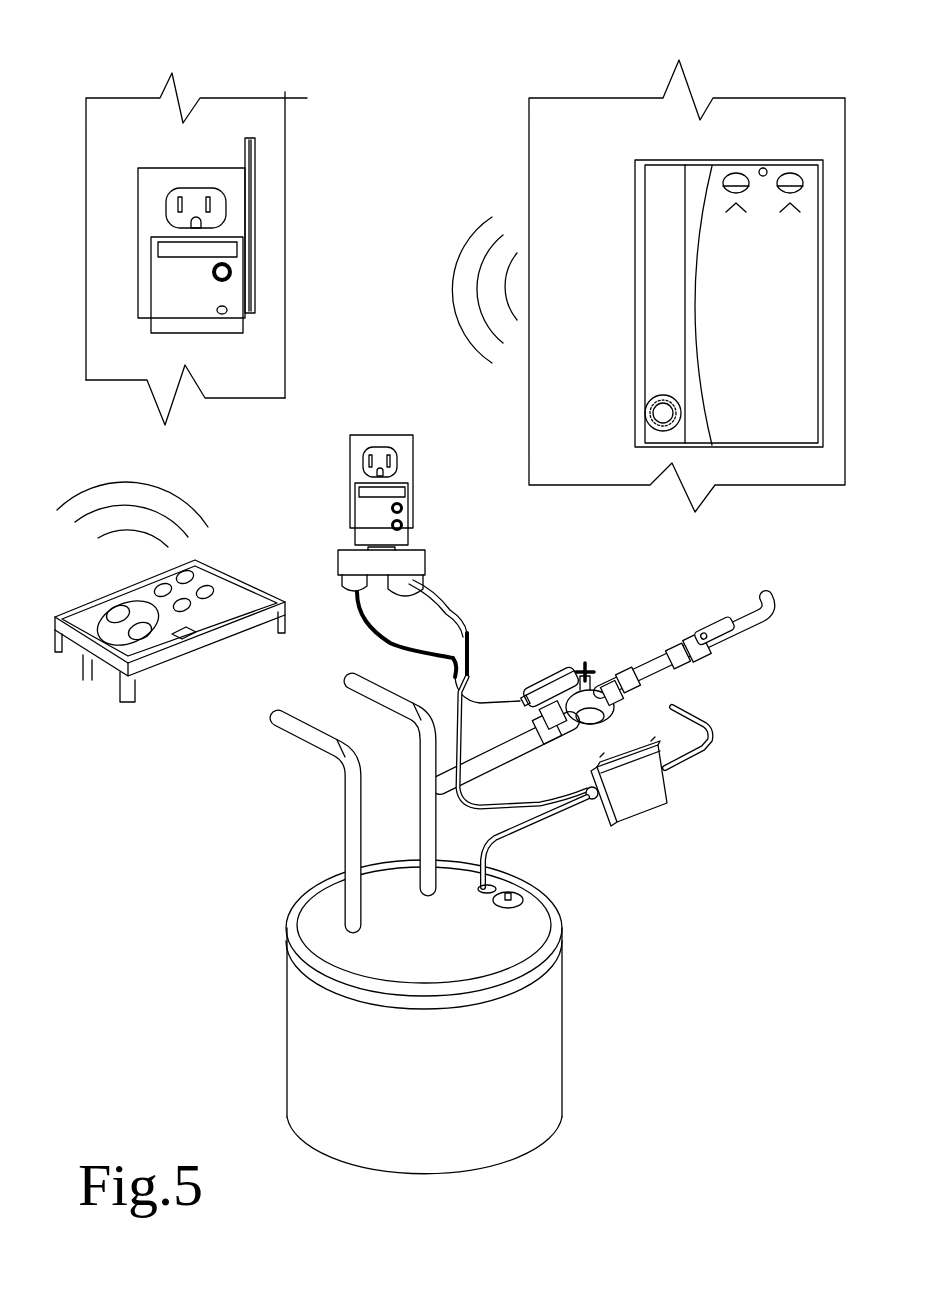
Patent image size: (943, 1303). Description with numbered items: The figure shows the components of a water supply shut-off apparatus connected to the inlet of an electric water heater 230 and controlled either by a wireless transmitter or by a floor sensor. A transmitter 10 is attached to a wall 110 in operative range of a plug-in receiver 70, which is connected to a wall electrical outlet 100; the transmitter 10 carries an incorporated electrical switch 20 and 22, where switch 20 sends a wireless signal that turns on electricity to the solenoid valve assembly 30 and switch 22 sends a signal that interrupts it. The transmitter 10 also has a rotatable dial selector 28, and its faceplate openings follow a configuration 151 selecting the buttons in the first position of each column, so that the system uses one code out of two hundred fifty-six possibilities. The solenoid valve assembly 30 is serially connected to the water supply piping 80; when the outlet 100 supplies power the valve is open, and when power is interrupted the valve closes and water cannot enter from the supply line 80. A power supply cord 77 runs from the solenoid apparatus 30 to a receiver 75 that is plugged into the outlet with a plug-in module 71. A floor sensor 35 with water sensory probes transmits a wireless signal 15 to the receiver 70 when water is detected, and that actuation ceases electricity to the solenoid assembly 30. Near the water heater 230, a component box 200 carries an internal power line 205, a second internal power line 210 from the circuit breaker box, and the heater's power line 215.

The transmitter 10 is at (687, 148).
The wireless signal 15 is at (475, 278).
The switch 20 is at (733, 177).
The switch 22 is at (792, 175).
The second code selector 28 is at (223, 270).
The solenoid valve assembly 30 is at (583, 652).
The floor sensor 35 is at (190, 673).
The plug-in receiver 70 is at (175, 345).
The plug-in module 71 is at (350, 560).
The receiver 75 is at (423, 508).
The power supply cord 77 is at (468, 627).
The water supply piping 80 is at (642, 685).
The wall electrical outlet 100 is at (162, 167).
The wall 110 is at (223, 127).
The configuration 151 is at (765, 400).
The sensor box 200 is at (657, 818).
The internal power line 205 is at (368, 628).
The second internal power line 210 is at (703, 718).
The power line 215 is at (553, 825).
The electric water heater 230 is at (522, 1005).